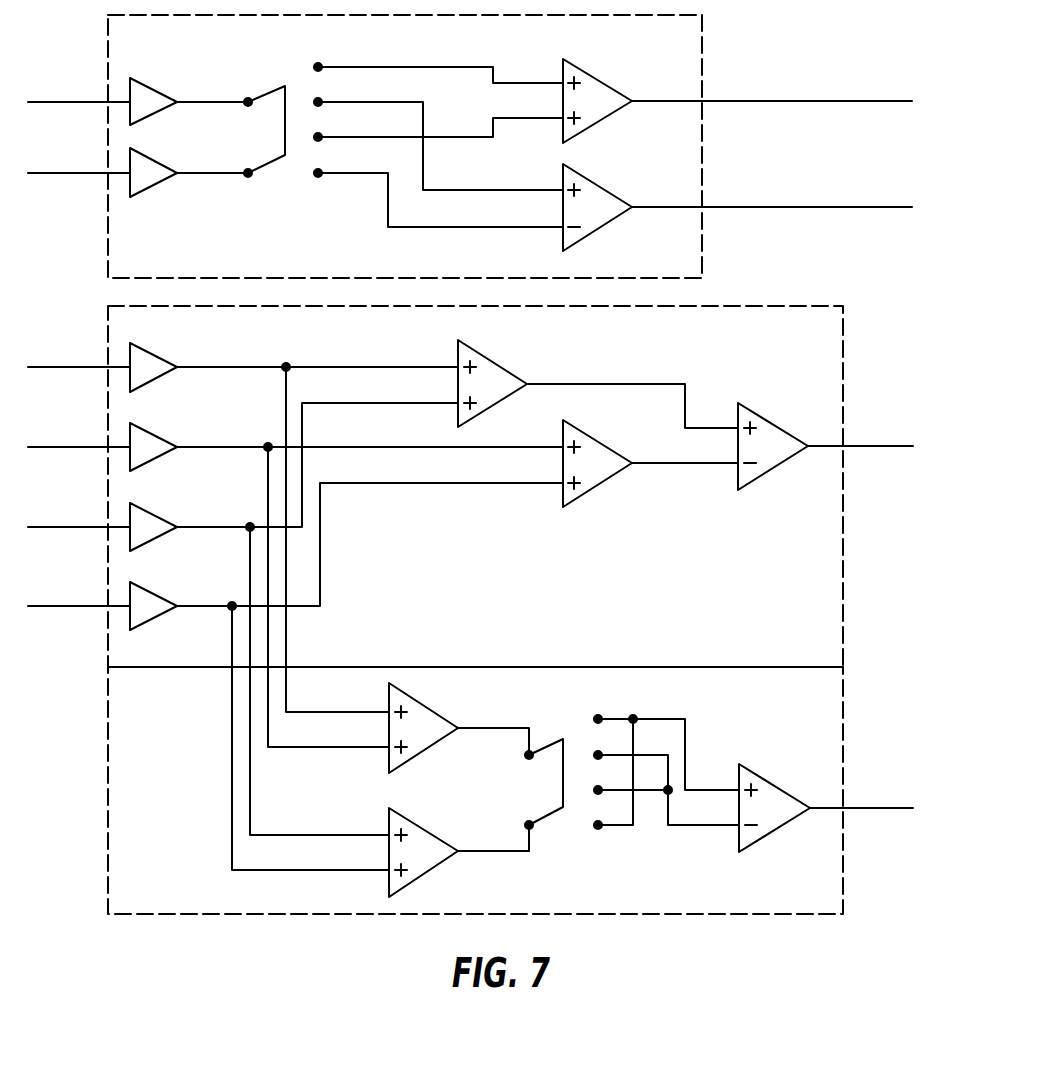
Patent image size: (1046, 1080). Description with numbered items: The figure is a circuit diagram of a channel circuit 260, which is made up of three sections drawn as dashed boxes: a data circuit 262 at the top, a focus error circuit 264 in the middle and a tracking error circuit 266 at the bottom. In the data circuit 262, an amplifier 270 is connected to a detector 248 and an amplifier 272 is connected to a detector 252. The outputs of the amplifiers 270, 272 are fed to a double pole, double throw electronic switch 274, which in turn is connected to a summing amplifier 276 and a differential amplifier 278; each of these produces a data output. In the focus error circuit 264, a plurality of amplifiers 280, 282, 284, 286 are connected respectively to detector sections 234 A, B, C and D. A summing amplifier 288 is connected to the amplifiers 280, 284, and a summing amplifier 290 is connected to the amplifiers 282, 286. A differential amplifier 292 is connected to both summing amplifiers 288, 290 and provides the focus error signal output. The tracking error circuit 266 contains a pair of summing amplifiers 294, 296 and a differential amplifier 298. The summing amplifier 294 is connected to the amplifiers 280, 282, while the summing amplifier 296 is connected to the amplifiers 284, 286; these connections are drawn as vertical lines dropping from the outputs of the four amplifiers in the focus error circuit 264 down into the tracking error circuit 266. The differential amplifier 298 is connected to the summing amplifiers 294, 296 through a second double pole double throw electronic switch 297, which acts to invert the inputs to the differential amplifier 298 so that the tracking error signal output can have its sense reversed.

The detector section 234 is at (79, 472).
The detector 248 is at (79, 88).
The detector 252 is at (79, 159).
The channel circuit 260 is at (184, 937).
The data circuit 262 is at (702, 57).
The focus error circuit 264 is at (843, 352).
The tracking error circuit 266 is at (843, 712).
The amplifier 270 is at (157, 89).
The amplifier 272 is at (160, 162).
The double pole, double throw electronic switch 274 is at (270, 92).
The summing amplifier 276 is at (598, 80).
The differential amplifier 278 is at (598, 185).
The amplifier 280 is at (162, 360).
The amplifier 282 is at (162, 439).
The amplifier 284 is at (162, 518).
The amplifier 286 is at (162, 597).
The summing amplifier 288 is at (498, 365).
The summing amplifier 290 is at (598, 442).
The differential amplifier 292 is at (768, 421).
The summing amplifier 294 is at (427, 750).
The summing amplifier 296 is at (435, 838).
The double pole double throw electronic switch 297 is at (553, 741).
The differential amplifier 298 is at (770, 782).